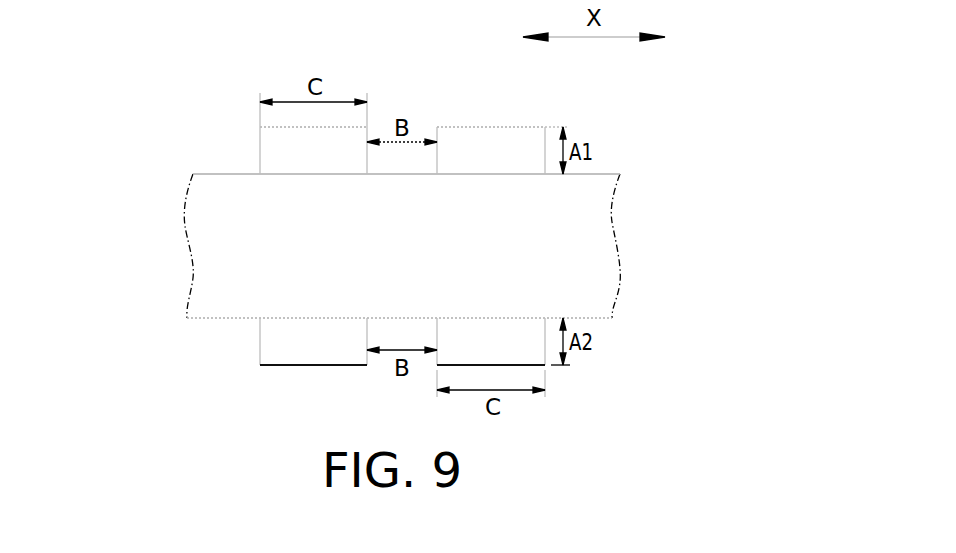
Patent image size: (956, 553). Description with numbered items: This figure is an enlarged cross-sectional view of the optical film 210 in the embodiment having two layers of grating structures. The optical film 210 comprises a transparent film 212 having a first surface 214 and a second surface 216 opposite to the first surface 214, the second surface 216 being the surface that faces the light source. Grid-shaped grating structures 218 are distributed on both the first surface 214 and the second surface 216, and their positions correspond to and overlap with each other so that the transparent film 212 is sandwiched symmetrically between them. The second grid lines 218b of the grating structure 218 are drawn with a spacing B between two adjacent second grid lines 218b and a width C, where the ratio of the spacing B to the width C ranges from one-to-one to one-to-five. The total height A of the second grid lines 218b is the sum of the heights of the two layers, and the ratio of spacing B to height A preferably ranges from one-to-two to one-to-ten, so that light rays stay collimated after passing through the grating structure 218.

The optical film 210 is at (68, 112).
The transparent film 212 is at (205, 203).
The first surface 214 is at (223, 173).
The second surface 216 is at (216, 318).
The grating structure 218 is at (530, 120).
The second grid lines 218b is at (478, 133).